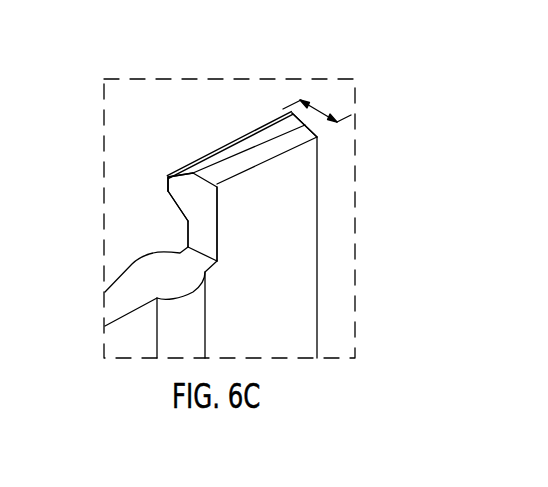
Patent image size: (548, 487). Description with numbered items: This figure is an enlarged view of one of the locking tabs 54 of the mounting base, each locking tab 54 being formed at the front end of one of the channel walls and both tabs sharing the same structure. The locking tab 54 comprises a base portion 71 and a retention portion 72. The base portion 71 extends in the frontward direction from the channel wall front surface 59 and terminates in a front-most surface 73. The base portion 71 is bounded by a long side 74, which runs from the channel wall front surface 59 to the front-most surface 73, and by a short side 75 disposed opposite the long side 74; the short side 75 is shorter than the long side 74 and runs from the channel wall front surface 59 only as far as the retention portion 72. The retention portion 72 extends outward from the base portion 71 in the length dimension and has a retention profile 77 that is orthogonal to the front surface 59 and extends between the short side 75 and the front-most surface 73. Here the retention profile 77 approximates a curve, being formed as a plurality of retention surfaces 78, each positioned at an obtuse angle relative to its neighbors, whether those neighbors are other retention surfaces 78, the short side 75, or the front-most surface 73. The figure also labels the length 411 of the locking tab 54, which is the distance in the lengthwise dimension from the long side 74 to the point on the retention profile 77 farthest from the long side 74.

The locking tab 54 is at (273, 111).
The channel wall front surface 59 is at (150, 275).
The base portion 71 is at (207, 236).
The retention portion 72 is at (217, 156).
The front-most surface 73 is at (269, 134).
The long side 74 is at (218, 218).
The short side 75 is at (188, 238).
The retention profile 77 is at (168, 175).
The retention surfaces 78 is at (168, 178).
The length 411 is at (328, 108).